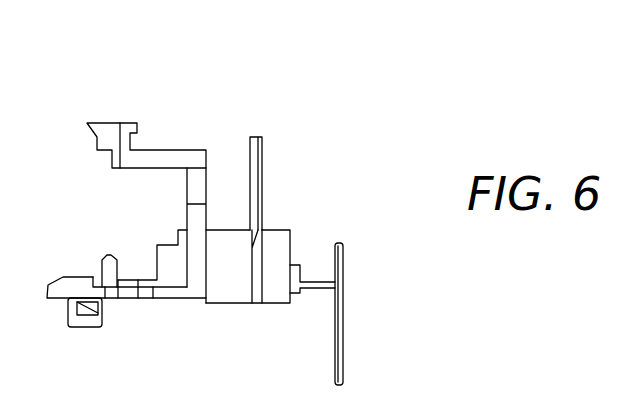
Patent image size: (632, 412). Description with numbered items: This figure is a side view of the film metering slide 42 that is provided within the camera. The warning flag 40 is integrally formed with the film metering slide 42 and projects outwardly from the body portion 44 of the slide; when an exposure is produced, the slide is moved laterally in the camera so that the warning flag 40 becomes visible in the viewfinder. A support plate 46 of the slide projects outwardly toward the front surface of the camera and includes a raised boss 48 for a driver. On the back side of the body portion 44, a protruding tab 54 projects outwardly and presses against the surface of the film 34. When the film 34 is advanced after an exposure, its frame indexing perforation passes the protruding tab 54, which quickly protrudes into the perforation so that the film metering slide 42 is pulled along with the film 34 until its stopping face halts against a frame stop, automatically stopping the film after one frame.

The film metering slide 42 is at (172, 95).
The warning flag 40 is at (258, 153).
The protruding tab 54 is at (320, 282).
The film 34 is at (343, 307).
The body portion 44 is at (232, 290).
The support plate 46 is at (137, 280).
The raised boss 48 is at (102, 260).